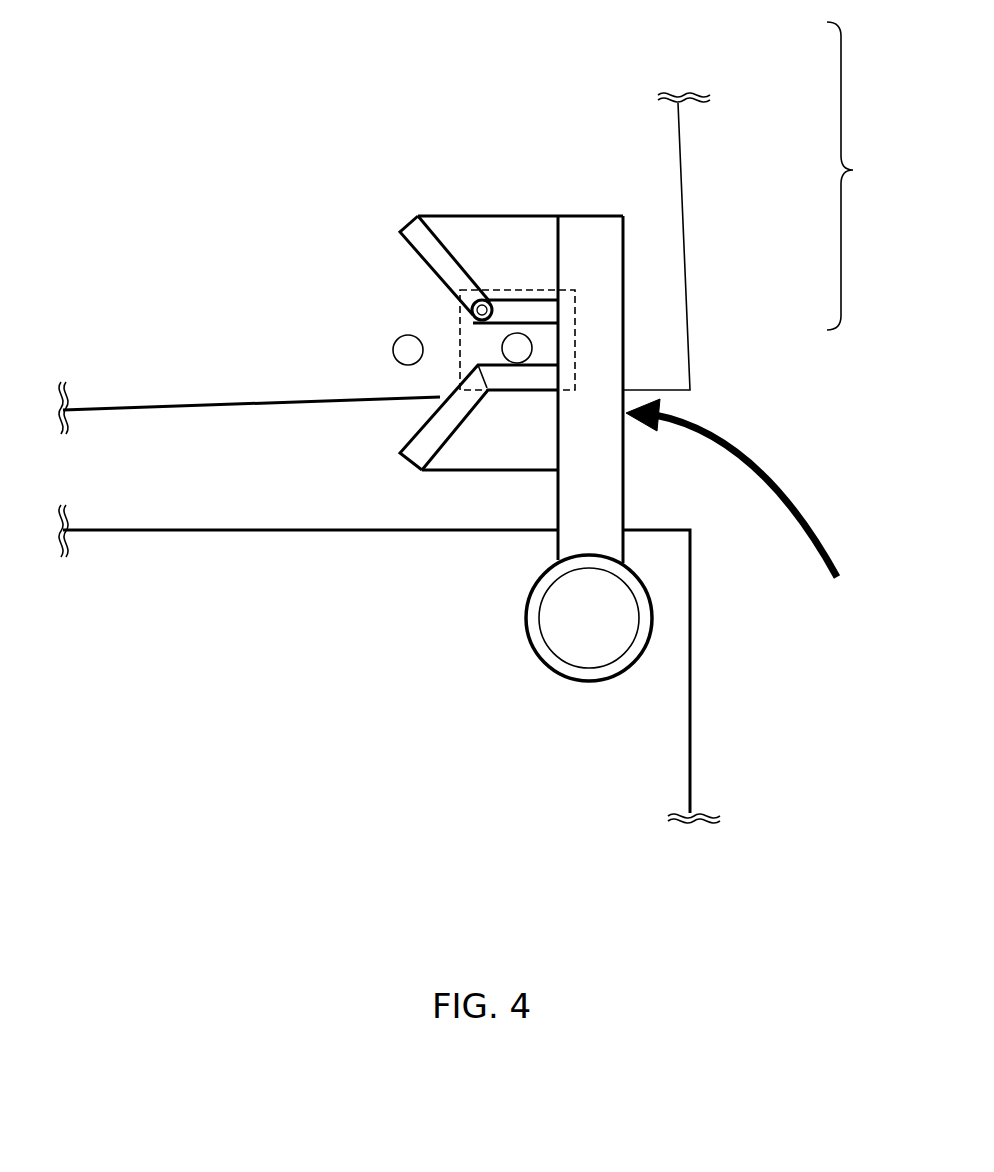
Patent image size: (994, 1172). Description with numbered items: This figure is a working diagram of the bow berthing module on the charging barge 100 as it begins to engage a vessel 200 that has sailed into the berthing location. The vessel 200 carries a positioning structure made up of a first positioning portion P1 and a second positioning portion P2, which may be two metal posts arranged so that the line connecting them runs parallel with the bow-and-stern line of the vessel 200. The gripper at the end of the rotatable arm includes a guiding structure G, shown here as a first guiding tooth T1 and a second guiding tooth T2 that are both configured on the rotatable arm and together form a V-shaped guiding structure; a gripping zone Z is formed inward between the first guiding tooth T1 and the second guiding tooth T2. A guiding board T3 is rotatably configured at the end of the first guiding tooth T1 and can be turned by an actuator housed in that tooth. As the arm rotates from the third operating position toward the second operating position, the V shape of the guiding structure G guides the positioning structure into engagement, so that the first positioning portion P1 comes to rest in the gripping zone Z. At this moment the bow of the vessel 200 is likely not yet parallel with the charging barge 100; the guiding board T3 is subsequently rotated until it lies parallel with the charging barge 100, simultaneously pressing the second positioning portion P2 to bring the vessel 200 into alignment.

The vessel 200 is at (537, 294).
The charging barge 100 is at (389, 602).
The first guiding tooth T1 is at (518, 253).
The second guiding tooth T2 is at (507, 428).
The guiding board T3 is at (440, 252).
The guiding structure G is at (858, 176).
The gripping zone Z is at (457, 317).
The first positioning portion P1 is at (518, 350).
The second positioning portion P2 is at (417, 350).